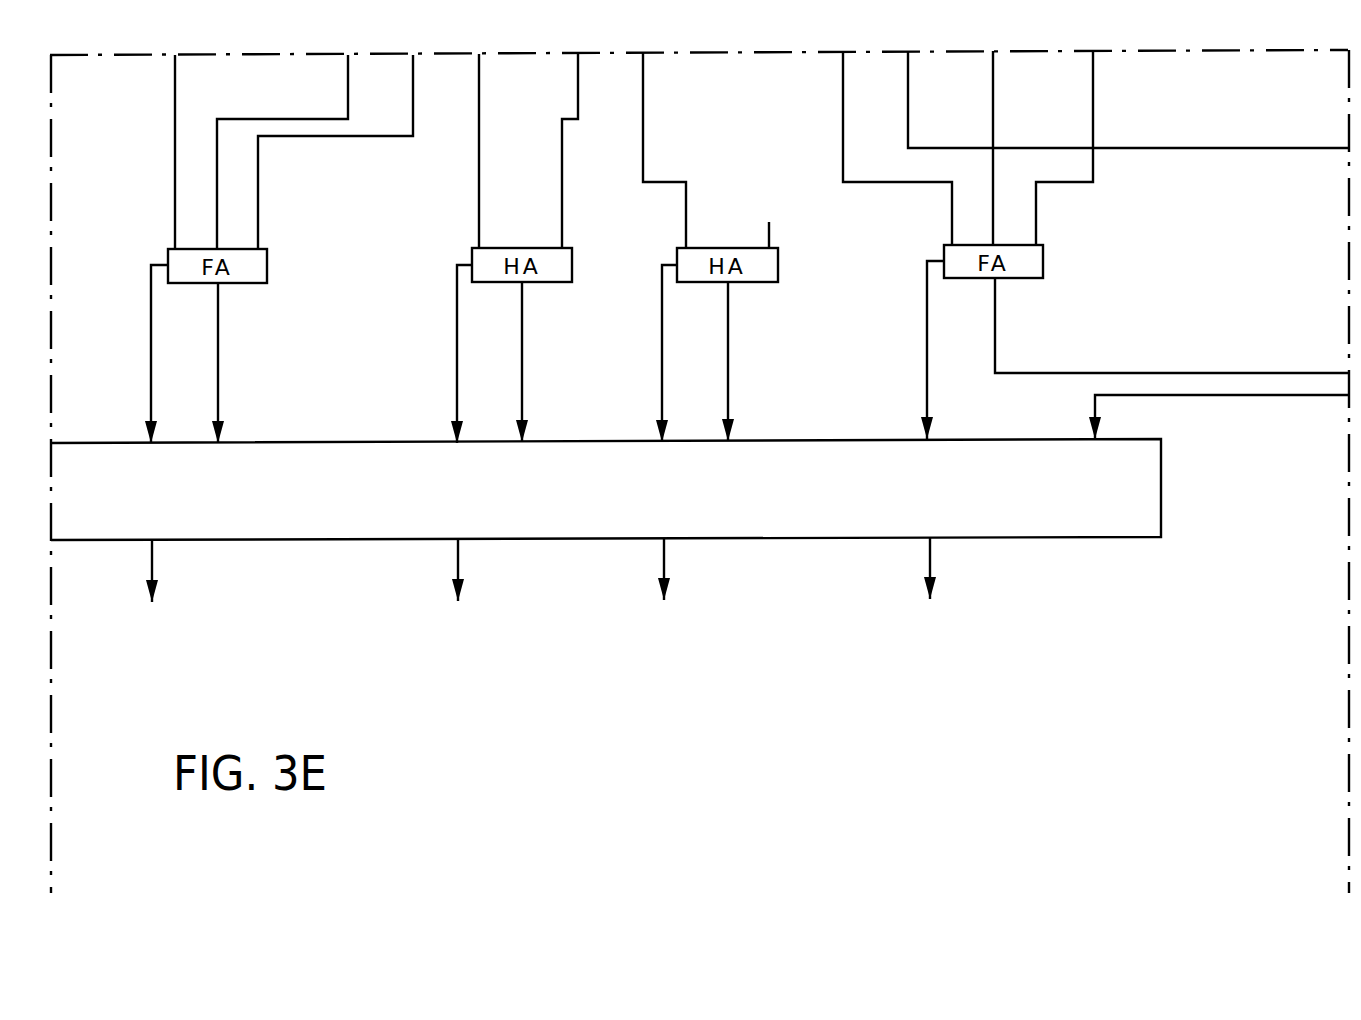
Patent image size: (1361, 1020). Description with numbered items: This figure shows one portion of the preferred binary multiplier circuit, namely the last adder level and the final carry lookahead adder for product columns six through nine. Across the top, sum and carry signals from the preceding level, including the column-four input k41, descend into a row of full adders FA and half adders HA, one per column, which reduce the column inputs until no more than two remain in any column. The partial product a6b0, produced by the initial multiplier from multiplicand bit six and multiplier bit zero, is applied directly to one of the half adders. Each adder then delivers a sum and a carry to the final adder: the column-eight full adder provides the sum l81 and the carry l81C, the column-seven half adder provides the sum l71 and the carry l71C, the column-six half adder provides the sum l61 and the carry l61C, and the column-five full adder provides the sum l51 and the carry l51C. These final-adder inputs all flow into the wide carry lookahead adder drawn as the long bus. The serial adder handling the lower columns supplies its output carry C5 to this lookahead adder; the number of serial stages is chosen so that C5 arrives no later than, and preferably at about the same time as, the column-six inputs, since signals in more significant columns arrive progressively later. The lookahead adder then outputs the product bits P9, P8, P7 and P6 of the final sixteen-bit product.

The carry input to final adder l81C is at (151, 278).
The sum input to final adder l81 is at (218, 335).
The carry input to final adder l71C is at (457, 343).
The sum input to final adder l71 is at (522, 367).
The carry input to final adder l61C is at (662, 345).
The sum input to final adder l61 is at (729, 365).
The carry input to final adder l51C is at (927, 315).
The sum input to final adder l51 is at (995, 308).
The partial product a6b0 is at (766, 217).
The level L4 input k41 is at (1207, 148).
The output carry of serial adder C5 is at (1227, 395).
The product bit P9 is at (143, 591).
The product bit P8 is at (448, 591).
The product bit P7 is at (654, 590).
The product bit P6 is at (920, 590).